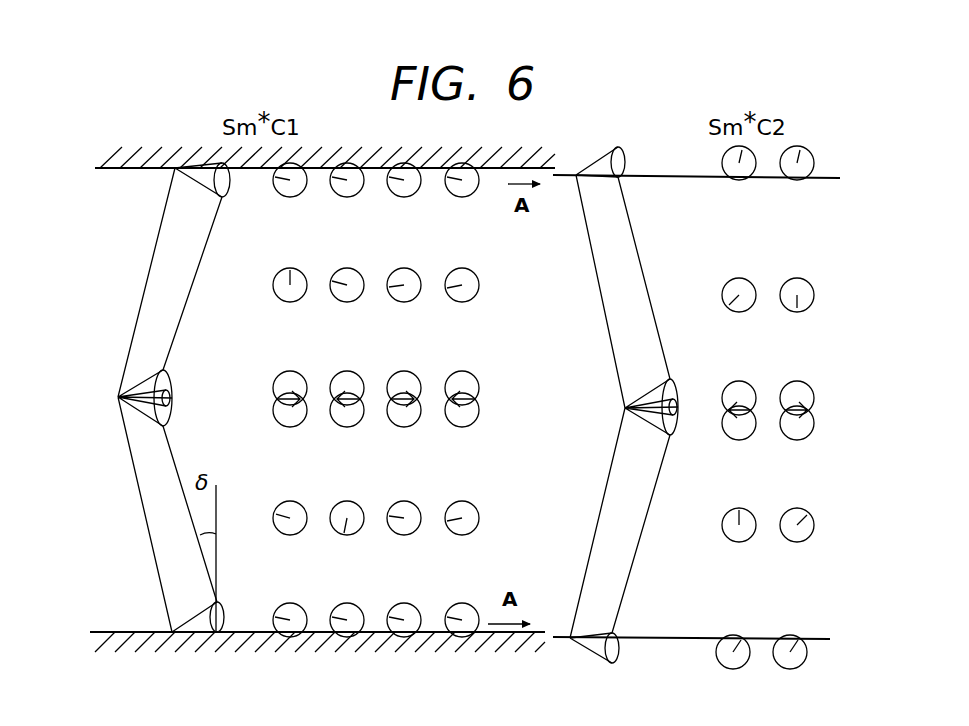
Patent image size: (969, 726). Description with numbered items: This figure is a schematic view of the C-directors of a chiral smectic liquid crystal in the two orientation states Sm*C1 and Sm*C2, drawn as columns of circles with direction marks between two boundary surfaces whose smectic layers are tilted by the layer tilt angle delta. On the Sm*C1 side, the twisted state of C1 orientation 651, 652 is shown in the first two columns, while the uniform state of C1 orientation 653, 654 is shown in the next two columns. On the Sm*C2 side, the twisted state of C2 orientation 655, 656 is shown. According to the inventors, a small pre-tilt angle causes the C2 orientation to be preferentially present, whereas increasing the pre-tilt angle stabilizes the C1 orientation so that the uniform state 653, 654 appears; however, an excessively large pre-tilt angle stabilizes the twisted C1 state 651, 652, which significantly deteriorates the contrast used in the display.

The twisted state of C1 orientation 651 is at (282, 652).
The twisted state of C1 orientation 652 is at (345, 652).
The uniform state of C1 orientation 653 is at (403, 652).
The uniform state of C1 orientation 654 is at (462, 652).
The twisted state of C2 orientation 655 is at (734, 672).
The twisted state of C2 orientation 656 is at (792, 672).